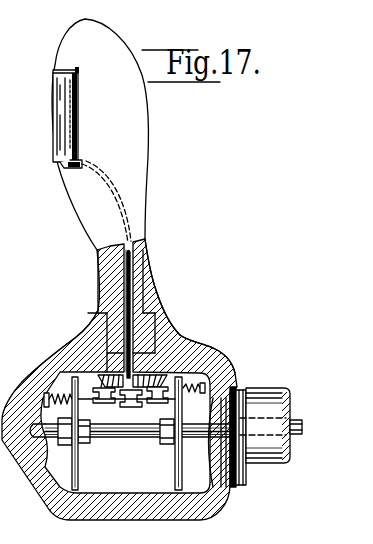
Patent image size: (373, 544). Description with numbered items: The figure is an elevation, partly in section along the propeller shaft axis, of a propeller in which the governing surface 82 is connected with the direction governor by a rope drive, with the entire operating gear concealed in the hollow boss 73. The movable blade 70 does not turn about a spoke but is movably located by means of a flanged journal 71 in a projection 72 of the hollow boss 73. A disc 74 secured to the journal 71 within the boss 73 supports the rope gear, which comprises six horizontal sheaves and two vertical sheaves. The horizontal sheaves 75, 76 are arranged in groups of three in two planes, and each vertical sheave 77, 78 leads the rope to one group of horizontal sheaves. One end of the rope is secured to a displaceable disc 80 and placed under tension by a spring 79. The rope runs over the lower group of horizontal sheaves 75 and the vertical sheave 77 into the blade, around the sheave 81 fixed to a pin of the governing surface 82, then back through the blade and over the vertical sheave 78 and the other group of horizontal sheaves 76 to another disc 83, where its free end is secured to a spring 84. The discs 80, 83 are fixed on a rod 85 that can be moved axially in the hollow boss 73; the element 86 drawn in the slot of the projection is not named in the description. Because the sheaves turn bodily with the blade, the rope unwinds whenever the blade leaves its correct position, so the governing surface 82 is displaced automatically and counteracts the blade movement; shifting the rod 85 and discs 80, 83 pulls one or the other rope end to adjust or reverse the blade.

The movable blade 70 is at (138, 133).
The flanged journal 71 is at (167, 325).
The projection 72 is at (107, 315).
The hollow boss 73 is at (128, 510).
The disc 74 is at (200, 365).
The horizontal sheaves 75 is at (142, 402).
The horizontal sheaves 76 is at (234, 363).
The vertical sheave 77 is at (195, 337).
The vertical sheave 78 is at (72, 342).
The spring 79 is at (53, 383).
The displaceable disc 80 is at (79, 473).
The sheave 81 is at (63, 170).
The governing surface 82 is at (57, 125).
The disc 83 is at (176, 470).
The spring 84 is at (242, 435).
The rod 85 is at (122, 438).
The blade 86 is at (130, 288).